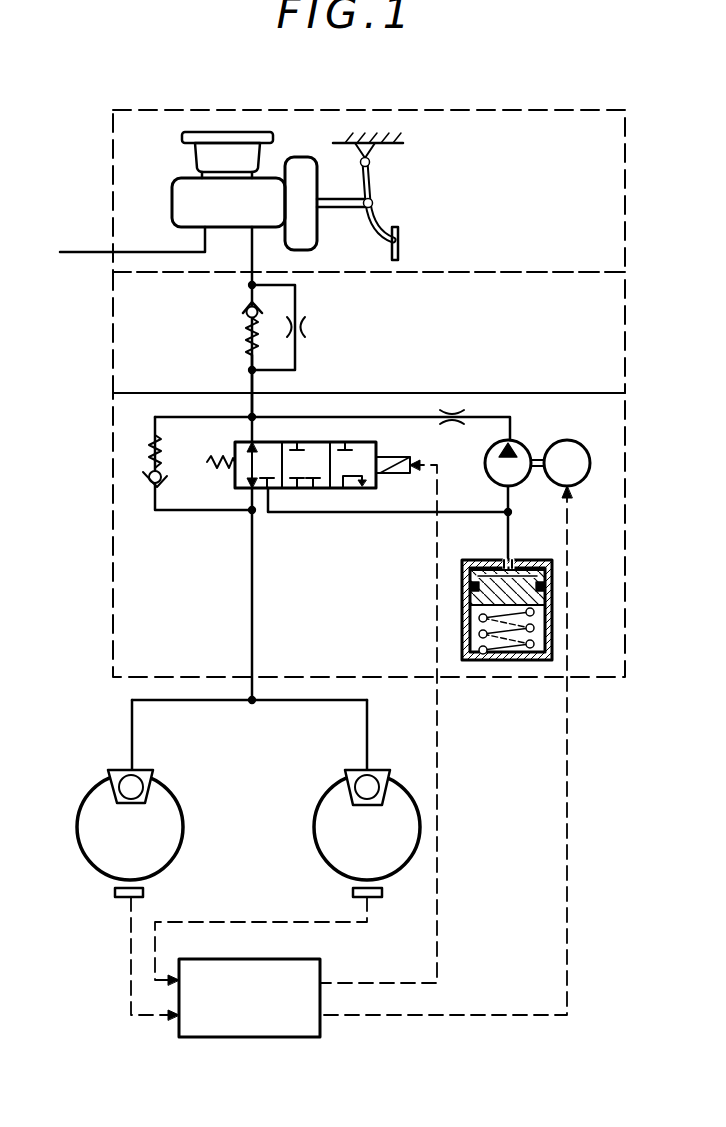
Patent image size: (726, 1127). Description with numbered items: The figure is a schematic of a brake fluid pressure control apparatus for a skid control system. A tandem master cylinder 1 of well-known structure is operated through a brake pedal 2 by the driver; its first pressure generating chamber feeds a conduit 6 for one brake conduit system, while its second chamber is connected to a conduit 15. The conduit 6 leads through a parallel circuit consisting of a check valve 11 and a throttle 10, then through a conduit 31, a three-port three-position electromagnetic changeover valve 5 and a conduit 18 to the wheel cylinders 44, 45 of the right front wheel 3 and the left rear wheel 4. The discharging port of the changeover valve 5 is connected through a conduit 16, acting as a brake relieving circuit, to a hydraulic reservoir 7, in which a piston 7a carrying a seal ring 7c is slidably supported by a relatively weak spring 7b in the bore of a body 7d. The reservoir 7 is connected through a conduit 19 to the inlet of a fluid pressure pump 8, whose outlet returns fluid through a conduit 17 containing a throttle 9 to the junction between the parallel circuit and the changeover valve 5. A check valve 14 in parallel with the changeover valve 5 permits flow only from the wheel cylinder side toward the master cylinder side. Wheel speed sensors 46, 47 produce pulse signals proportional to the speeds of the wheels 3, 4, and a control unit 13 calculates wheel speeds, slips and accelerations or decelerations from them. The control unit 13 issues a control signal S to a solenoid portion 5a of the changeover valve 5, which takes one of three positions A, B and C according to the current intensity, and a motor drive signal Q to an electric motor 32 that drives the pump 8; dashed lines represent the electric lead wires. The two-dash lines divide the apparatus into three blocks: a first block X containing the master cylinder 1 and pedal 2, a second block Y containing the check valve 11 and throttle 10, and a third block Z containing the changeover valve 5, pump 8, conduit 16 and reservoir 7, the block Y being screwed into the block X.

The tandem master cylinder 1 is at (180, 198).
The brake pedal 2 is at (400, 240).
The right front wheel 3 is at (178, 823).
The left rear wheel 4 is at (318, 827).
The three-port three-position electromagnetic changeover valve 5 is at (228, 450).
The solenoid portion 5a is at (391, 463).
The conduit 6 is at (252, 253).
The hydraulic reservoir 7 is at (534, 603).
The piston 7a is at (495, 585).
The spring 7b is at (535, 629).
The seal ring 7c is at (545, 588).
The body 7d is at (505, 655).
The fluid pressure pump 8 is at (522, 447).
The throttle 9 is at (452, 410).
The throttle 10 is at (307, 327).
The check valve 11 is at (243, 312).
The control unit 13 is at (245, 958).
The check valve 14 is at (165, 483).
The conduit 15 is at (140, 252).
The conduit 16 is at (395, 512).
The conduit 17 is at (387, 416).
The conduit 18 is at (250, 604).
The conduit 19 is at (506, 498).
The conduit 31 is at (248, 375).
The electric motor 32 is at (576, 445).
The wheel cylinder 44 is at (132, 780).
The wheel cylinder 45 is at (370, 780).
The wheel speed sensor 46 is at (145, 892).
The wheel speed sensor 47 is at (383, 893).
The first block X is at (625, 193).
The second block Y is at (625, 330).
The third block Z is at (625, 545).
The control signal S is at (437, 857).
The motor drive signal Q is at (567, 883).
The valve position A is at (263, 490).
The valve position B is at (313, 490).
The valve position C is at (352, 490).